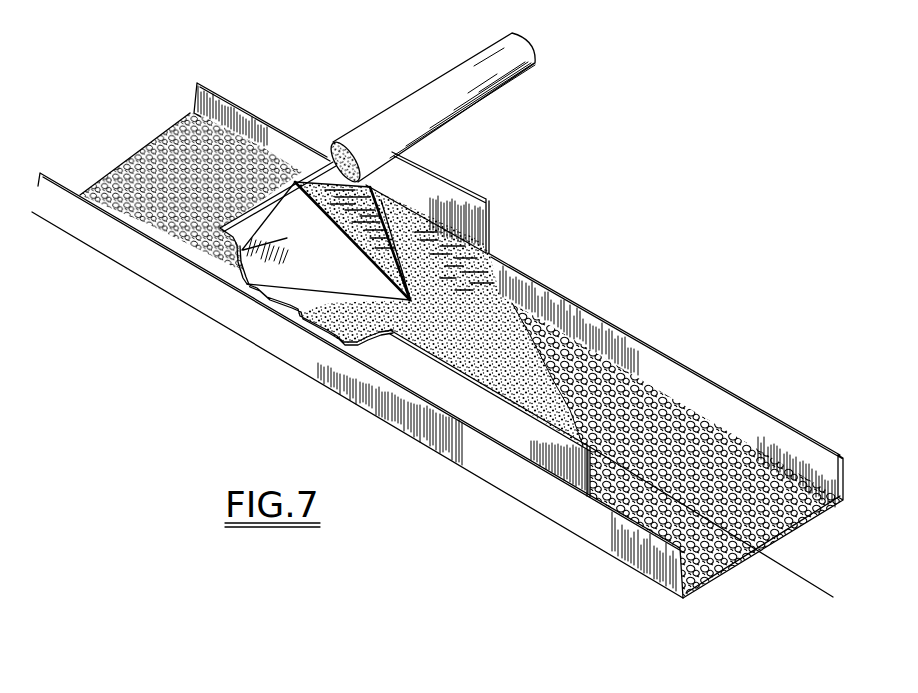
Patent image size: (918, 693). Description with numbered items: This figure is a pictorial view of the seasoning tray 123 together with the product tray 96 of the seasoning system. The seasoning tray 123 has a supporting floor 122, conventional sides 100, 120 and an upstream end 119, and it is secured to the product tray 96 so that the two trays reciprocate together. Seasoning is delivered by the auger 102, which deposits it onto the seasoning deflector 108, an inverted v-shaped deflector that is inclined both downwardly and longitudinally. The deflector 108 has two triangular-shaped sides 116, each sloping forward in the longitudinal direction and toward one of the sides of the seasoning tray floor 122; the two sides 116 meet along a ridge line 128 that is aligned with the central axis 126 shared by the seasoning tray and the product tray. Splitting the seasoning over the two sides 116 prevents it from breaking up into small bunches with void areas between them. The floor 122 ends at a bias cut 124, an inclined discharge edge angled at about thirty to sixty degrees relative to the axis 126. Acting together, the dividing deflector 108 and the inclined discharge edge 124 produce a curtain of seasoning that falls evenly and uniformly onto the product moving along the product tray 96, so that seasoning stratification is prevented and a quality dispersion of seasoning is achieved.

The product tray 96 is at (688, 373).
The side 100 is at (490, 231).
The auger 102 is at (522, 80).
The seasoning deflector 108 is at (371, 183).
The triangular-shaped sides 116 is at (202, 313).
The upstream end 119 is at (298, 158).
The side 120 is at (272, 318).
The seasoning tray floor 122 is at (538, 305).
The seasoning tray 123 is at (410, 370).
The bias cut 124 is at (570, 327).
The central axis 126 is at (800, 580).
The ridge line 128 is at (373, 212).